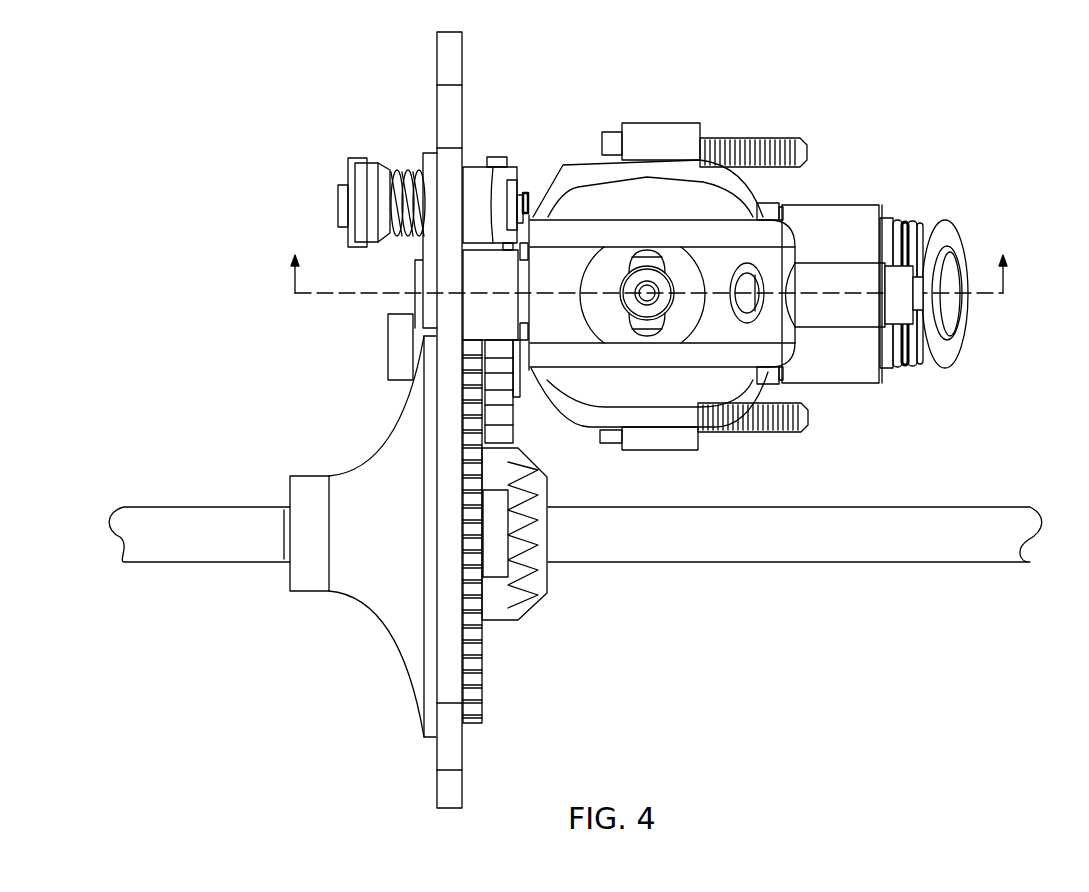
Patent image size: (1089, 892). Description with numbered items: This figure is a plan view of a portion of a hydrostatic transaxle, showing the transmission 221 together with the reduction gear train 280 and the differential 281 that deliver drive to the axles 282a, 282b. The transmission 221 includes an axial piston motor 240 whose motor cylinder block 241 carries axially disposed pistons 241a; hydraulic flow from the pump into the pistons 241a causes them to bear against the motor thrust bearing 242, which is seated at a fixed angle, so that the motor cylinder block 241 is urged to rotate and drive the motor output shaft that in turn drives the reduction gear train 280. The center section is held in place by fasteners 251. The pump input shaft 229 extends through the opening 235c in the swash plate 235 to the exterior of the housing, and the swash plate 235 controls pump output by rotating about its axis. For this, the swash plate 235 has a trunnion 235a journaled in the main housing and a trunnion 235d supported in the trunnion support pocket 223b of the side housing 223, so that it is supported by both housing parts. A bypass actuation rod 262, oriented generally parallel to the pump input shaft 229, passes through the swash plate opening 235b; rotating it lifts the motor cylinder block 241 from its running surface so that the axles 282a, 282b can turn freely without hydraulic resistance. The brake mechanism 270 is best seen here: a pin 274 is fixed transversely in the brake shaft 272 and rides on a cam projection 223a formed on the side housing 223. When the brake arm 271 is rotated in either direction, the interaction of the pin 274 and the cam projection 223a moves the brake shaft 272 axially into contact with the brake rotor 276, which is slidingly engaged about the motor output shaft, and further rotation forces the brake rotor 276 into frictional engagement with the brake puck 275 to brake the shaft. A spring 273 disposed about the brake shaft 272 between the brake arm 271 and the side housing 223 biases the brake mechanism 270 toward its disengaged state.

The transmission 221 is at (893, 127).
The side housing 223 is at (398, 549).
The cam projection 223a is at (493, 180).
The trunnion support pocket 223b is at (517, 288).
The pump input shaft 229 is at (632, 287).
The swash plate 235 is at (632, 397).
The trunnion 235a is at (863, 321).
The swash plate opening 235b is at (733, 313).
The opening 235c is at (637, 253).
The trunnion 235d is at (528, 306).
The axial piston motor 240 is at (903, 406).
The motor cylinder block 241 is at (857, 247).
The pistons 241a is at (892, 217).
The motor thrust bearing 242 is at (947, 352).
The fasteners 251 is at (755, 138).
The bypass actuation rod 262 is at (747, 287).
The brake mechanism 270 is at (334, 172).
The brake arm 271 is at (367, 185).
The brake shaft 272 is at (337, 203).
The spring 273 is at (408, 170).
The pin 274 is at (493, 157).
The brake puck 275 is at (523, 208).
The brake rotor 276 is at (533, 213).
The reduction gear train 280 is at (532, 417).
The differential 281 is at (568, 617).
The axle 282a is at (807, 547).
The axle 282b is at (228, 549).